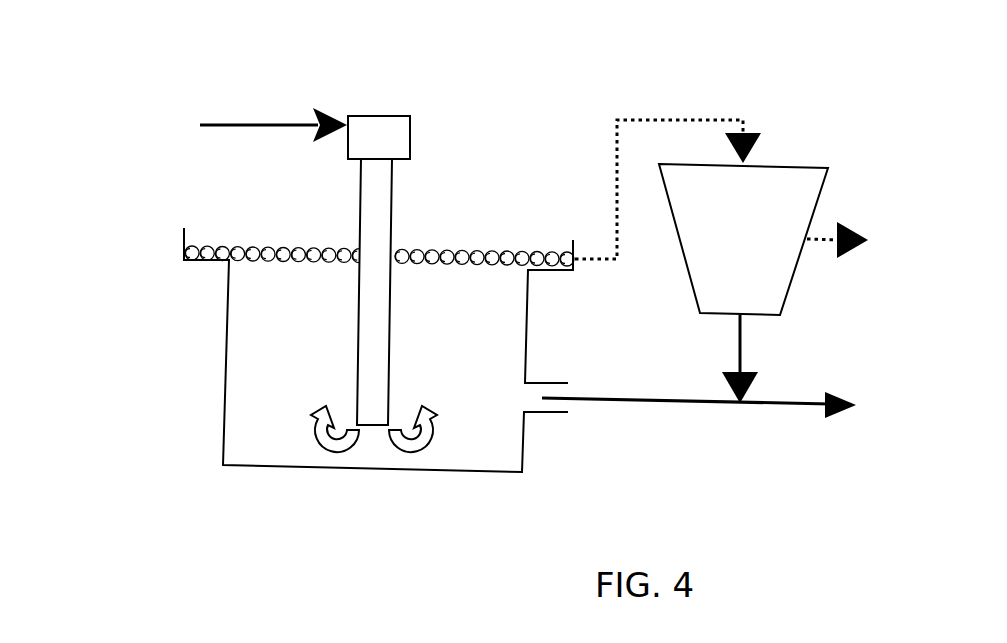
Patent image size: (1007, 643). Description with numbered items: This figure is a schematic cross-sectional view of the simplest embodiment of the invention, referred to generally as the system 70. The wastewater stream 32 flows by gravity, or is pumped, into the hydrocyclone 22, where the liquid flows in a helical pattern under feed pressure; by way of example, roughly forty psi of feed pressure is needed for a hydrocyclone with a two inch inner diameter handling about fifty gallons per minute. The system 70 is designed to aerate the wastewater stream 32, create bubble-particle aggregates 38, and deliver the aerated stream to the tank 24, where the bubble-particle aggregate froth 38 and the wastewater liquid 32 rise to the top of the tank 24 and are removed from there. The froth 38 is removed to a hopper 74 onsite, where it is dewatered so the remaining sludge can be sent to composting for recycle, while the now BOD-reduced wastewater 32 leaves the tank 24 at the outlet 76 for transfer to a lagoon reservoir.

The system 70 is at (100, 127).
The wastewater stream 32 is at (222, 124).
The hydrocyclone 22 is at (410, 138).
The tank 24 is at (228, 350).
The bubble-particle aggregate froth 38 is at (223, 247).
The hopper 74 is at (822, 190).
The outlet 76 is at (535, 403).